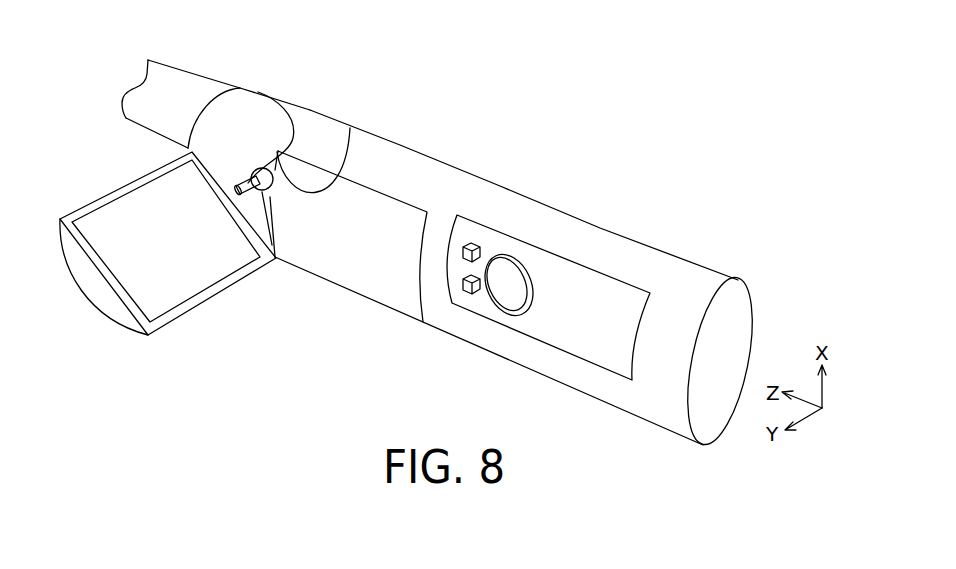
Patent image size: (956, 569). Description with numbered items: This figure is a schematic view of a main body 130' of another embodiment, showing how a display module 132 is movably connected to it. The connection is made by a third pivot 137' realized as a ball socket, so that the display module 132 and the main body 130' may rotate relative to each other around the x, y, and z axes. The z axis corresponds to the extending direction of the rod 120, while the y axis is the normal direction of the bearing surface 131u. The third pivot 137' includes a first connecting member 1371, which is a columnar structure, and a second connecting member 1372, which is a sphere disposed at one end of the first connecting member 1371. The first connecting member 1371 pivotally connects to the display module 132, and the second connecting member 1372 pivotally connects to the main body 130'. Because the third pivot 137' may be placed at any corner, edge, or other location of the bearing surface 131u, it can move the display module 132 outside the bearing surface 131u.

The rod 120 is at (185, 92).
The main body 130' is at (519, 280).
The bearing surface 131u is at (368, 260).
The display module 132 is at (190, 263).
The third pivot 137' is at (285, 144).
The first connecting member 1371 is at (295, 121).
The second connecting member 1372 is at (335, 165).